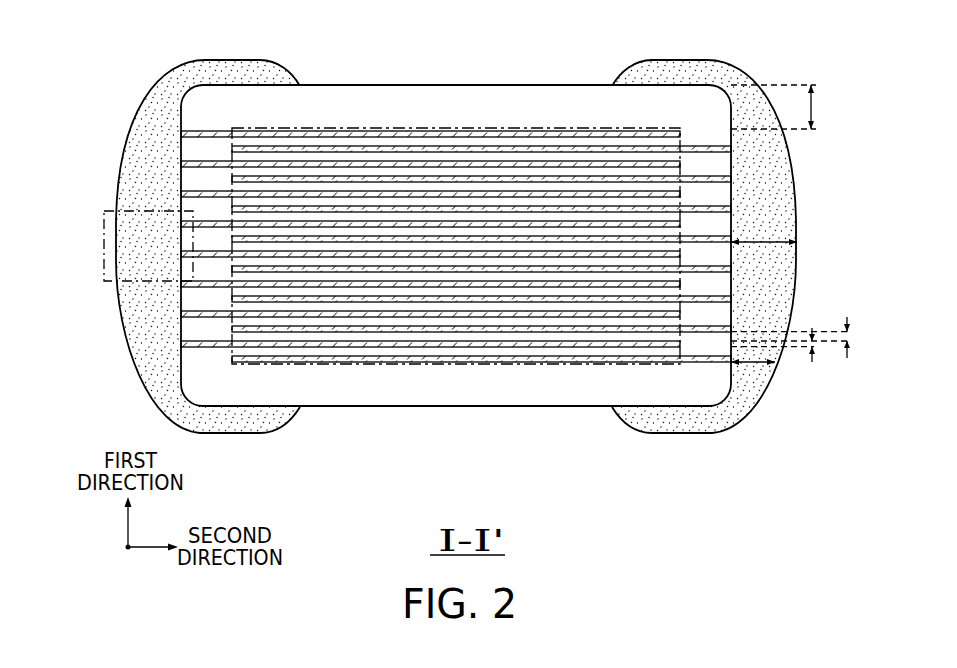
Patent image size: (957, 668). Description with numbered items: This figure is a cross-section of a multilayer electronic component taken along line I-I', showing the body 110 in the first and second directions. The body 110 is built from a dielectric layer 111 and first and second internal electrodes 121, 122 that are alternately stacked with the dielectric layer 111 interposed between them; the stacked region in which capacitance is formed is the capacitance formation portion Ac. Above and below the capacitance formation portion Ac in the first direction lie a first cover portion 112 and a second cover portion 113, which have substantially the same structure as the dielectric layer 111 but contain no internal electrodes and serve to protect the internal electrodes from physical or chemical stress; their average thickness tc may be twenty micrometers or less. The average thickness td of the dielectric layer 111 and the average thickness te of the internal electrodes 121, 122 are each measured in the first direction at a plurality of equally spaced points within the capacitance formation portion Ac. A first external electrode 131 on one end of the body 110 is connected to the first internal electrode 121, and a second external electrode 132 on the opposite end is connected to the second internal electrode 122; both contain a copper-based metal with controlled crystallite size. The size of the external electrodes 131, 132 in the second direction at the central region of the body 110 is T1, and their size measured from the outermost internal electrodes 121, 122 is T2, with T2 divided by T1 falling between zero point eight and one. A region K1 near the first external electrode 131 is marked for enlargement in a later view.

The body 110 is at (403, 85).
The dielectric layer 111 is at (345, 153).
The first cover portion 112 is at (460, 97).
The second cover portion 113 is at (425, 400).
The first internal electrode 121 is at (530, 133).
The second internal electrode 122 is at (550, 148).
The first external electrode 131 is at (130, 180).
The second external electrode 132 is at (783, 178).
The capacitance formation portion Ac is at (512, 367).
The region K1 is at (104, 245).
The size of external electrode in second direction at central region T1 is at (767, 243).
The size of external electrode in second direction at outermost internal electrodes T2 is at (755, 362).
The average thickness of cover portions tc is at (783, 107).
The average thickness of dielectric layer td is at (802, 337).
The average thickness of internal electrodes te is at (785, 345).